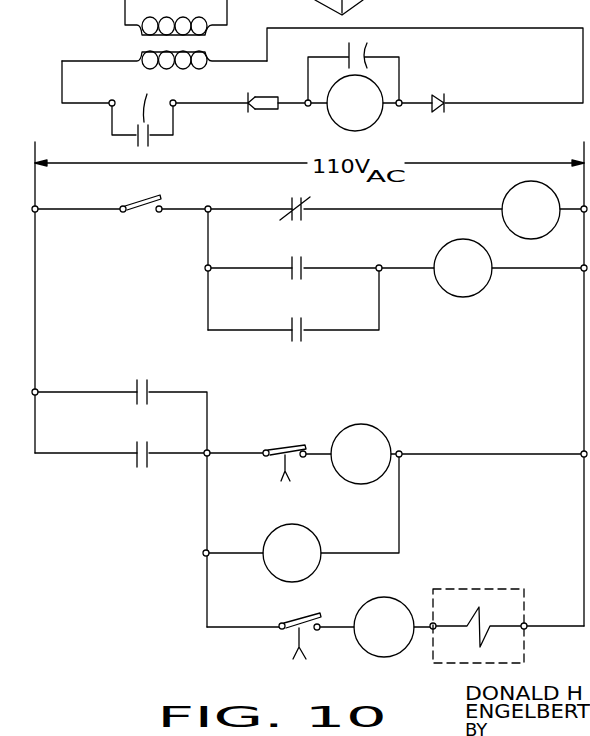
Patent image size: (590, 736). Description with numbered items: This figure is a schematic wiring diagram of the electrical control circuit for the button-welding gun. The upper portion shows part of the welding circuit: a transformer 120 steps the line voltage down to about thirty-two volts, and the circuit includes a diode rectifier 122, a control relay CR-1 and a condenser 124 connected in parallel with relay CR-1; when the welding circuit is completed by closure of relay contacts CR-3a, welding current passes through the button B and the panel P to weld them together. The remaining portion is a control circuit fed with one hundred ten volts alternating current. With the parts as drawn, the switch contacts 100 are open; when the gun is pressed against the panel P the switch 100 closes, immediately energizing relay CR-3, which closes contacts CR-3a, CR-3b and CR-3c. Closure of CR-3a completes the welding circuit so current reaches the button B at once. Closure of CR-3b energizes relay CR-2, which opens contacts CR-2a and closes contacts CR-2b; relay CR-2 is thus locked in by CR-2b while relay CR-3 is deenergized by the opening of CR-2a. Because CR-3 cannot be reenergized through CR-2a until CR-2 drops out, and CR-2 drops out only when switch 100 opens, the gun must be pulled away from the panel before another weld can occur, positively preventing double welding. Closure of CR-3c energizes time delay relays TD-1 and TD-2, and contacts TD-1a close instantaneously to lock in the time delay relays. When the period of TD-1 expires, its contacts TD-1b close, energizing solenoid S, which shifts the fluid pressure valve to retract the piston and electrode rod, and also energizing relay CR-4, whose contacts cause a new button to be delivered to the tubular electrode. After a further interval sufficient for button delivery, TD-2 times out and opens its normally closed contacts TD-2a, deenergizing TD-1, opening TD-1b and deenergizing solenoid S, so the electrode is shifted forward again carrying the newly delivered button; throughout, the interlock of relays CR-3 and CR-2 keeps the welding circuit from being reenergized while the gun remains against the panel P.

The switch contacts 100 is at (149, 198).
The transformer 120 is at (148, 44).
The diode rectifier 122 is at (435, 97).
The condenser 124 is at (360, 37).
The panel P is at (250, 100).
The button B is at (267, 108).
The solenoid S is at (478, 626).
The control relay CR-1 is at (353, 103).
The relay CR-2 is at (481, 268).
The relay CR-3 is at (541, 210).
The relay CR-4 is at (392, 627).
The time delay relay TD-1 is at (456, 454).
The time delay relay TD-2 is at (331, 519).
The relay contacts CR-3a is at (143, 111).
The contacts CR-2a is at (295, 197).
The relay contacts CR-3b is at (296, 257).
The contacts CR-2b is at (296, 318).
The contacts CR-3c is at (141, 383).
The relay contacts TD-1a is at (141, 441).
The normally closed contacts TD-2a is at (284, 443).
The contacts TD-1b is at (292, 617).